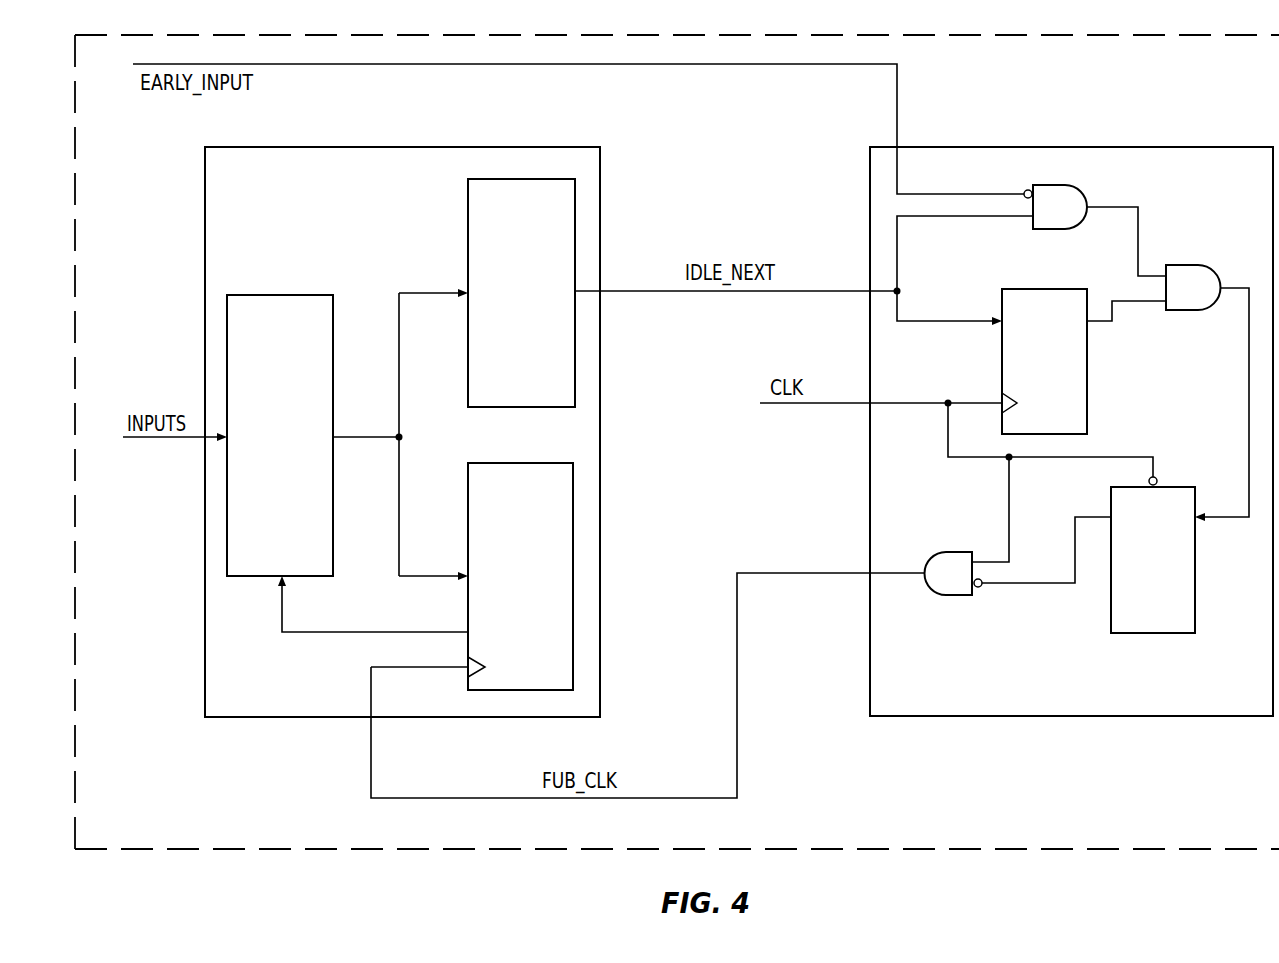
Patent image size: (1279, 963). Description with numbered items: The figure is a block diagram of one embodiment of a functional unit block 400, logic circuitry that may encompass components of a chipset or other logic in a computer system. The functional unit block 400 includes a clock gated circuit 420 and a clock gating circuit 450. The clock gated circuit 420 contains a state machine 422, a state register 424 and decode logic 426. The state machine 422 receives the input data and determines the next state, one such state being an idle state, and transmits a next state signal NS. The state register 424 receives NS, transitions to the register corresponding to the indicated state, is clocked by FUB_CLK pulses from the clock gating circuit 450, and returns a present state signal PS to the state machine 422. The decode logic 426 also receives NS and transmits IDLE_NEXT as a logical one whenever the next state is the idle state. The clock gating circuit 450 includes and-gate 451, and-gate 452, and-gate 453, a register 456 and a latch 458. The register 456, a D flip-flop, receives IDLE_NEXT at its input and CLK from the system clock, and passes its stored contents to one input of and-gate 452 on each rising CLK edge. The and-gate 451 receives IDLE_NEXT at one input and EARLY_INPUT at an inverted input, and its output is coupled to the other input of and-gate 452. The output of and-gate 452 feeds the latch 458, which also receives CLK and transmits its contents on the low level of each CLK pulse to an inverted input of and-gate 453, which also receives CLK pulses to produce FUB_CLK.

The functional unit block 400 is at (1246, 812).
The clock gated circuit 420 is at (262, 702).
The state machine 422 is at (299, 541).
The state register 424 is at (539, 653).
The decode logic 426 is at (541, 369).
The clock gating circuit 450 is at (925, 703).
The and-gate 451 is at (1075, 221).
The and-gate 452 is at (1210, 301).
The and-gate 453 is at (967, 584).
The register 456 is at (1064, 388).
The latch 458 is at (1172, 614).